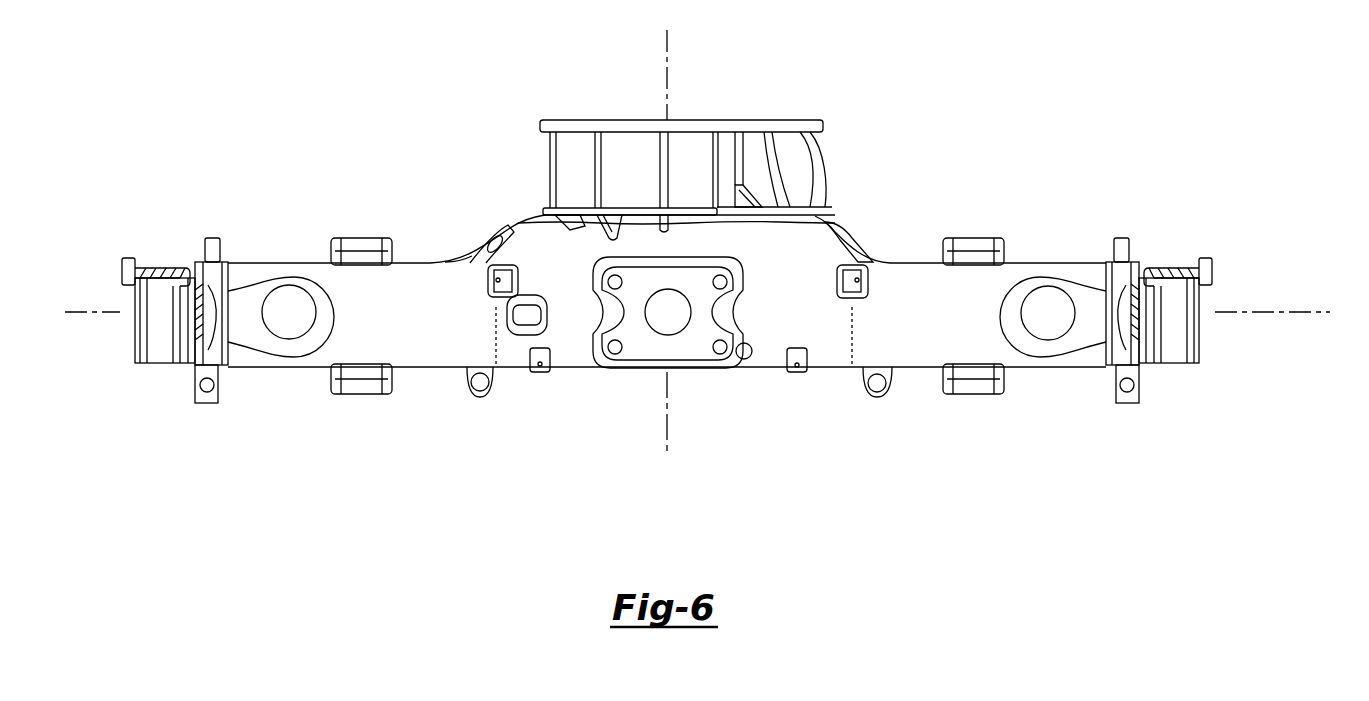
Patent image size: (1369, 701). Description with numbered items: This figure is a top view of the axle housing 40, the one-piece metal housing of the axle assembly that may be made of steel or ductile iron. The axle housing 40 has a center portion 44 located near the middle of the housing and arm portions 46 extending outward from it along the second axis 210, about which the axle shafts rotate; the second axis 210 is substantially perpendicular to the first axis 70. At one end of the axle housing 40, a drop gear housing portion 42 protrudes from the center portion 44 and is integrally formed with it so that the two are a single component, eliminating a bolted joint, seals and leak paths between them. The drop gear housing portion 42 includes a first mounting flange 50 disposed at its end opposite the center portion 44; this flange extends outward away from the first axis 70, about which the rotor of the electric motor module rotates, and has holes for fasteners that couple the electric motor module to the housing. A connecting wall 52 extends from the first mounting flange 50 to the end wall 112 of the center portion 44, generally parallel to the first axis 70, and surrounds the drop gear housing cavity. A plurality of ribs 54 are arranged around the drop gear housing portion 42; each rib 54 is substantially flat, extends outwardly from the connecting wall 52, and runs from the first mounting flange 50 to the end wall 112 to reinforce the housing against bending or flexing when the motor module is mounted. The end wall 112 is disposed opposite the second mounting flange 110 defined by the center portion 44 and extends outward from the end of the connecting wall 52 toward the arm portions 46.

The axle housing 40 is at (940, 130).
The drop gear housing portion 42 is at (540, 116).
The center portion 44 is at (801, 292).
The arm portion 46 is at (277, 263).
The first mounting flange 50 is at (778, 123).
The connecting wall 52 is at (690, 147).
The rib 54 is at (552, 152).
The first axis 70 is at (667, 435).
The second mounting flange 110 is at (502, 372).
The end wall 112 is at (803, 208).
The second axis 210 is at (1279, 312).